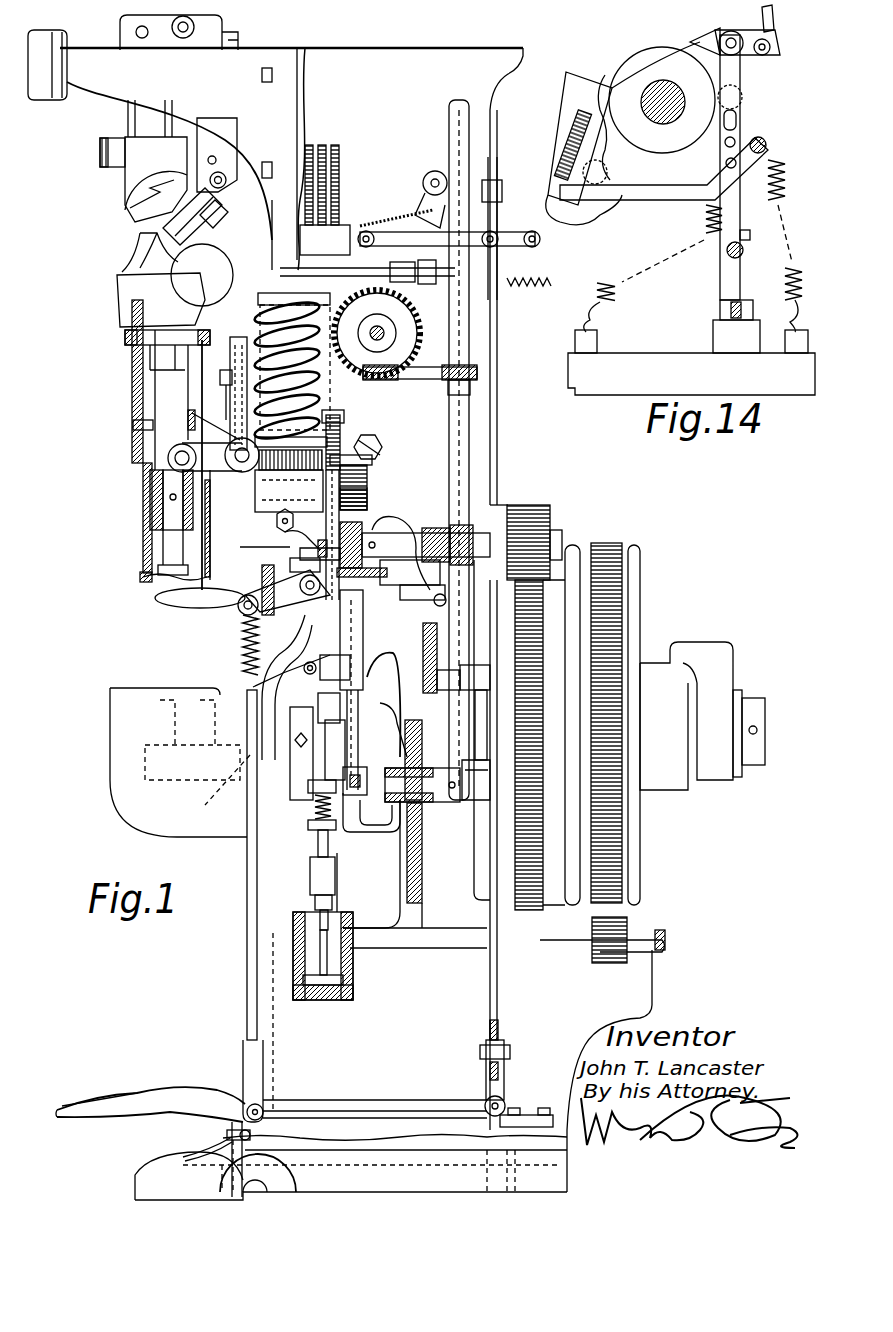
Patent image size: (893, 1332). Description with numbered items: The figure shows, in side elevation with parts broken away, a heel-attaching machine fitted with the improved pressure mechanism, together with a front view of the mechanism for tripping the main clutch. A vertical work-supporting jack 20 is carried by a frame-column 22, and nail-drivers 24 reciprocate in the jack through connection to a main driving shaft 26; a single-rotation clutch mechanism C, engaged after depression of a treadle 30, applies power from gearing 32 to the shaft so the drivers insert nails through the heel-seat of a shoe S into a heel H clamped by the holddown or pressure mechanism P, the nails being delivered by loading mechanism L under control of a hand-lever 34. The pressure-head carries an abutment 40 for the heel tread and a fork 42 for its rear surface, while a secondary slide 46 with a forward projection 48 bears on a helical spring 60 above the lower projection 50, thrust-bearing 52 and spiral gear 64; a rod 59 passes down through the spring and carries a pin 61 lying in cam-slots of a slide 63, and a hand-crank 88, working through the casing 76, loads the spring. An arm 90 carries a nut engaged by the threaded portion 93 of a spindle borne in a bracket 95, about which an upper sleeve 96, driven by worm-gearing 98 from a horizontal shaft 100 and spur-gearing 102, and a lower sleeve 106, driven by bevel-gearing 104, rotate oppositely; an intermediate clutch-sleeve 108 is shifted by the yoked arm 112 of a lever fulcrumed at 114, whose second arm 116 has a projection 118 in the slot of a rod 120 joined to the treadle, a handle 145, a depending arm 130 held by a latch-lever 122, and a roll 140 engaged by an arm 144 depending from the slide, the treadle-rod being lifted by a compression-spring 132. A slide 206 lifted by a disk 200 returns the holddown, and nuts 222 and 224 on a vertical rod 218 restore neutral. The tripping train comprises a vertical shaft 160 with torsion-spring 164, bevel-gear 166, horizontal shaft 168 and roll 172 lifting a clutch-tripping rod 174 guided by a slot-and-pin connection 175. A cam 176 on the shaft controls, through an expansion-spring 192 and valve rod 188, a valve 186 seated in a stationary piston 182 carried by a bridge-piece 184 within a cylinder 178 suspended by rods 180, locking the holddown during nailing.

In FIG. 1, the abutment 40 is at (150, 205).
In FIG. 1, the fork 42 is at (190, 232).
In FIG. 1, the hand-lever 34 is at (236, 274).
In FIG. 1, the forward projection 48 is at (310, 292).
In FIG. 1, the helical spring 60 is at (290, 305).
In FIG. 1, the rod 59 is at (287, 342).
In FIG. 1, the nail-drivers 24 is at (150, 352).
In FIG. 1, the casing 76 is at (222, 380).
In FIG. 1, the secondary slide 46 is at (325, 378).
In FIG. 1, the nut and lock-nut 222 is at (336, 418).
In FIG. 1, the work-supporting jack 20 is at (140, 462).
In FIG. 1, the hand-crank 88 is at (180, 470).
In FIG. 1, the thrust-bearing 52 is at (262, 478).
In FIG. 1, the lower projection 50 is at (262, 498).
In FIG. 1, the spiral gear 64 is at (352, 452).
In FIG. 1, the arm 90 is at (378, 448).
In FIG. 1, the vertical rod 218 is at (372, 461).
In FIG. 1, the upper threaded portion 93 is at (370, 470).
In FIG. 1, the nut and lock-nut 224 is at (370, 497).
In FIG. 1, the worm-gearing 98 is at (385, 520).
In FIG. 1, the transversely extending pin 61 is at (275, 522).
In FIG. 1, the slide 63 is at (295, 540).
In FIG. 1, the spaced rods 180 is at (300, 548).
In FIG. 1, the roll 140 is at (290, 562).
In FIG. 1, the arm 144 is at (330, 555).
In FIG. 1, the fulcrum 114 is at (262, 595).
In FIG. 1, the bevel-gearing 104 is at (395, 562).
In FIG. 1, the upper sleeve 96 is at (432, 590).
In FIG. 1, the intermediate clutch-sleeve 108 is at (445, 600).
In FIG. 1, the handle 145 is at (160, 598).
In FIG. 1, the projection 118 is at (245, 620).
In FIG. 1, the second arm 116 is at (250, 650).
In FIG. 1, the depending arm 130 is at (258, 668).
In FIG. 1, the yoked arm 112 is at (320, 612).
In FIG. 1, the latch-lever 122 is at (305, 668).
In FIG. 1, the lower sleeve 106 is at (325, 668).
In FIG. 1, the slide 206 is at (325, 705).
In FIG. 1, the bracket 95 is at (440, 668).
In FIG. 1, the disk 200 is at (450, 680).
In FIG. 1, the compression-spring 132 is at (240, 690).
In FIG. 1, the cam 176 is at (290, 735).
In FIG. 1, the vertical shaft 160 is at (366, 740).
In FIG. 1, the torsion-spring 164 is at (405, 755).
In FIG. 1, the horizontal shaft 100 is at (565, 540).
In FIG. 1, the spur-gearing 102 is at (543, 565).
In FIG. 1, the main driving shaft 26 is at (216, 787).
In FIG. 14, the main driving shaft 26 is at (655, 95).
In FIG. 1, the expansion-spring 192 is at (308, 812).
In FIG. 1, the horizontal shaft 168 is at (425, 835).
In FIG. 1, the roll 172 is at (465, 830).
In FIG. 1, the frame-column 22 is at (247, 845).
In FIG. 14, the frame-column 22 is at (635, 355).
In FIG. 1, the bevel-gear 166 is at (355, 800).
In FIG. 1, the bridge-piece 184 is at (360, 835).
In FIG. 1, the cylinder 178 is at (330, 860).
In FIG. 1, the valve rod 188 is at (322, 945).
In FIG. 1, the stationary piston 182 is at (352, 960).
In FIG. 1, the rod 120 is at (245, 1015).
In FIG. 1, the valve 186 is at (325, 985).
In FIG. 1, the clutch-tripping rod 174 is at (490, 1000).
In FIG. 14, the clutch-tripping rod 174 is at (772, 36).
In FIG. 1, the slot-and-pin connection 175 is at (498, 1070).
In FIG. 14, the slot-and-pin connection 175 is at (730, 262).
In FIG. 1, the treadle 30 is at (110, 1095).
In FIG. 1, the gearing 32 is at (625, 920).
In FIG. 1, the single-rotation clutch mechanism C is at (498, 760).
In FIG. 14, the single-rotation clutch mechanism C is at (668, 26).
In FIG. 1, the loading mechanism L is at (382, 332).
In FIG. 1, the holddown or pressure mechanism P is at (228, 155).
In FIG. 1, the heel H is at (145, 255).
In FIG. 1, the shoe S is at (130, 298).